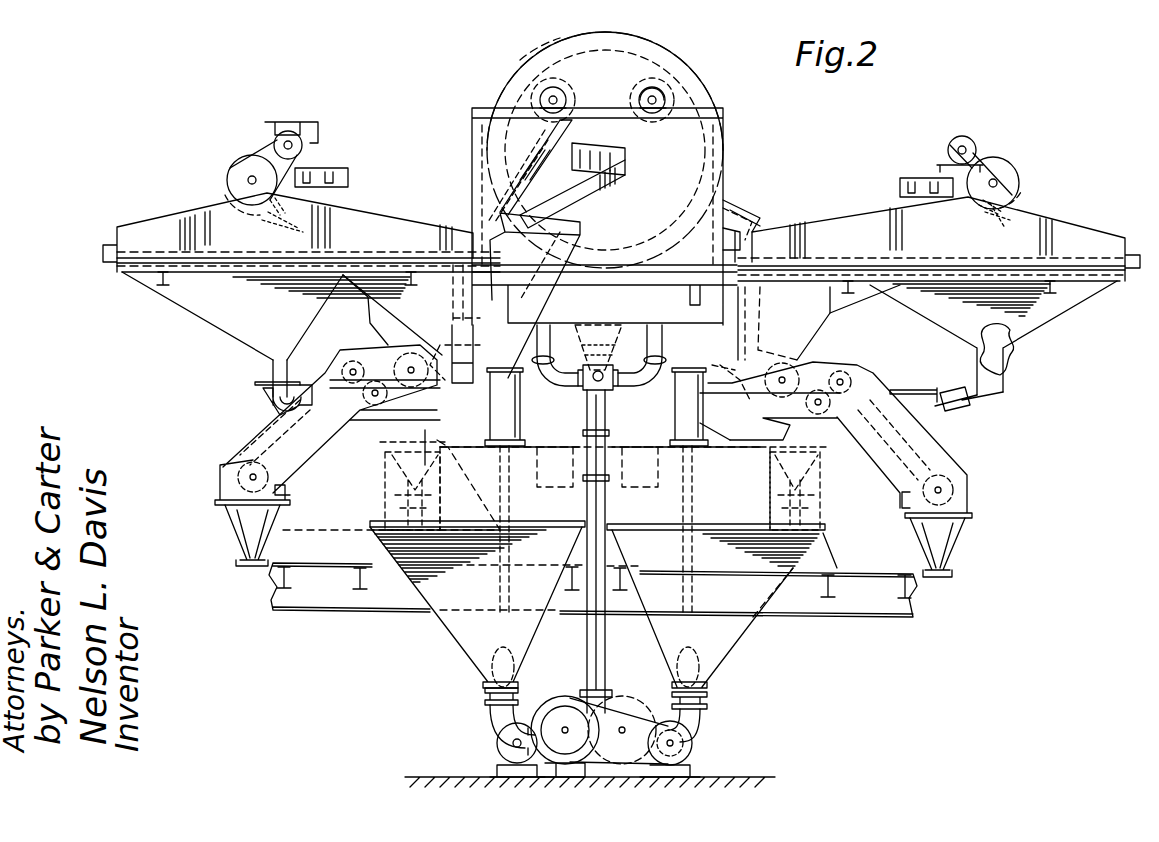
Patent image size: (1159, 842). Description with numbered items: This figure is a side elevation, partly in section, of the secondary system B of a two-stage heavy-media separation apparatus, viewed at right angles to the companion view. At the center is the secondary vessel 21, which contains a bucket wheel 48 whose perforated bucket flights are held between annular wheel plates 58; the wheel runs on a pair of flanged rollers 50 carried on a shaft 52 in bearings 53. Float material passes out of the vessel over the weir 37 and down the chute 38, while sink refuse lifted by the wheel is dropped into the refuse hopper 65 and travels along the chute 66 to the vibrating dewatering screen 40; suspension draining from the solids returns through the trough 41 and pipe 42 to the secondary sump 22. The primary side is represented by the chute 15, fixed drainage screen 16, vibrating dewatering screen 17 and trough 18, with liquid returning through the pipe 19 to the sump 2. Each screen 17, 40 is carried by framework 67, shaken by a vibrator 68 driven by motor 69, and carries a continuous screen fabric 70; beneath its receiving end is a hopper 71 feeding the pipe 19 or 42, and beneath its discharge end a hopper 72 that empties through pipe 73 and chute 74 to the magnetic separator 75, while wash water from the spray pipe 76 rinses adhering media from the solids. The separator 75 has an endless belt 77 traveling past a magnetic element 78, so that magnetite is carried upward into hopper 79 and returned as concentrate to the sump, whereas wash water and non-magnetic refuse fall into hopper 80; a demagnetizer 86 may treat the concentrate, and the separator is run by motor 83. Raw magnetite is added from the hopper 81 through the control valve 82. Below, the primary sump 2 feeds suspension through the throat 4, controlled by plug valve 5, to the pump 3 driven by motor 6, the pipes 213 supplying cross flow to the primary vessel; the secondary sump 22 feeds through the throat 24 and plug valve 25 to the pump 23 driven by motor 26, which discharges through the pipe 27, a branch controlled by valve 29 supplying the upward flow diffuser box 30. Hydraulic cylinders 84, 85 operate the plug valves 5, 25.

The secondary system B is at (700, 92).
The secondary vessel 21 is at (692, 75).
The bucket wheel 48 is at (650, 45).
The annular wheel plates 58 is at (553, 40).
The flanged rollers 50 is at (640, 94).
The shaft 52 is at (654, 90).
The bearings 53 is at (665, 102).
The weir 37 is at (598, 168).
The refuse hopper 65 is at (548, 128).
The chute 66 is at (522, 190).
The chute 38 is at (598, 205).
The trough 41 is at (528, 296).
The chute 15 is at (743, 215).
The fixed drainage screen 16 is at (758, 224).
The trough 18 is at (732, 250).
The vibrating mechanical dewatering screen 40 is at (373, 221).
The vibrating mechanical dewatering screen 17 is at (818, 233).
The continuous screen fabric 70 is at (352, 256).
The framework 67 is at (160, 284).
The hopper 72 is at (215, 318).
The pipe 73 is at (268, 370).
The chute 74 is at (260, 398).
The vibrator 68 is at (232, 175).
The motor 69 is at (290, 132).
The spray pipe 76 is at (349, 177).
The hopper for raw magnetite 81 is at (368, 305).
The hopper 71 is at (415, 322).
The magnetic element 78 is at (300, 432).
The endless belt 77 is at (285, 432).
The magnetic separator 75 is at (235, 465).
The hopper 79 is at (375, 425).
The hopper 80 is at (228, 528).
The control valve 82 is at (438, 458).
The demagnetizer 86 is at (418, 490).
The motor 83 is at (478, 362).
The pipe 42 is at (473, 376).
The upward flow diffuser box 30 is at (612, 340).
The pipes 213 is at (538, 342).
The valve 29 is at (586, 395).
The pipe 27 is at (586, 659).
The hydraulic cylinder 85 is at (520, 420).
The hydraulic cylinder 84 is at (676, 420).
The pipe 19 is at (722, 428).
The secondary sump 22 is at (460, 612).
The sump 2 is at (730, 635).
The plug valve 25 is at (492, 661).
The plug valve 5 is at (700, 674).
The throat 24 is at (483, 697).
The throat 4 is at (710, 699).
The motor 6 is at (497, 742).
The pump 23 is at (562, 700).
The pump 3 is at (626, 702).
The motor 26 is at (692, 742).